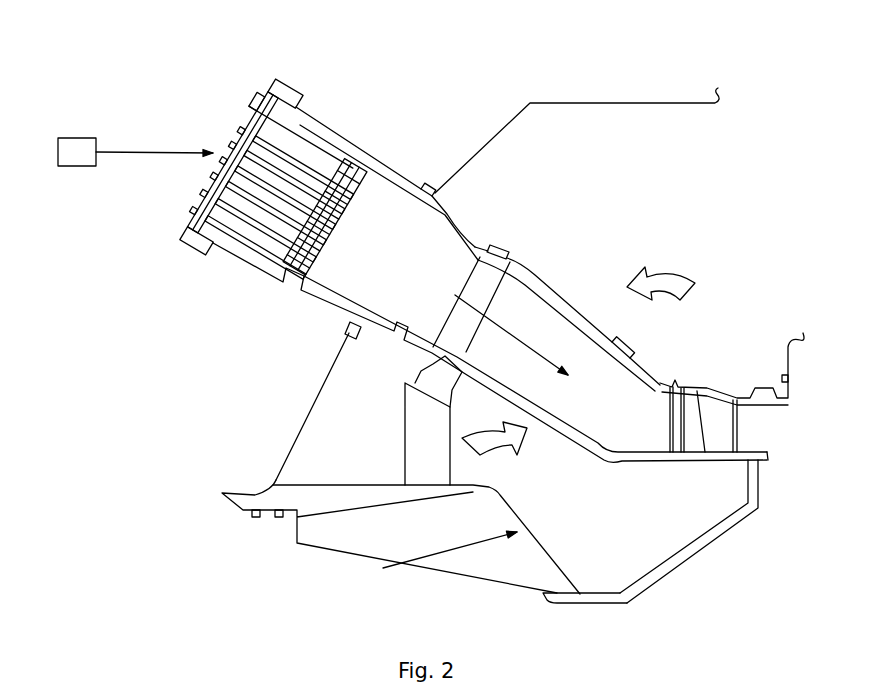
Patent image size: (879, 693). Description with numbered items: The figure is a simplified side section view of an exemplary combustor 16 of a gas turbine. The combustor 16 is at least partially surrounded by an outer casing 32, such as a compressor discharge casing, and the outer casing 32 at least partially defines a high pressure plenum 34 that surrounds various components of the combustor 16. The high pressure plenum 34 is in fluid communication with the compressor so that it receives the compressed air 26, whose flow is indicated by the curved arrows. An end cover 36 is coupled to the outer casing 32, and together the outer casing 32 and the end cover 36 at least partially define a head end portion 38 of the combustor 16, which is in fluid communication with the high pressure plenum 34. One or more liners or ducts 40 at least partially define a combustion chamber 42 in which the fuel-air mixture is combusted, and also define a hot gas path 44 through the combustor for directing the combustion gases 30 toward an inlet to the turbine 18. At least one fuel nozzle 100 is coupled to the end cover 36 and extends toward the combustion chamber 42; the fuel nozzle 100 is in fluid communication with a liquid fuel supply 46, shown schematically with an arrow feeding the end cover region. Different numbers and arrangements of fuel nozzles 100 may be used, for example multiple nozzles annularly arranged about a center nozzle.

The combustor 16 is at (557, 72).
The turbine 18 is at (769, 436).
The compressed air 26 is at (670, 275).
The combustion gases 30 is at (538, 347).
The outer casing 32 is at (507, 125).
The high pressure plenum 34 is at (679, 194).
The end cover 36 is at (197, 208).
The head end portion 38 is at (257, 258).
The liners or ducts 40 is at (448, 212).
The combustion chamber 42 is at (387, 254).
The hot gas path 44 is at (533, 313).
The liquid fuel supply 46 is at (90, 163).
The fuel nozzle 100 is at (304, 226).